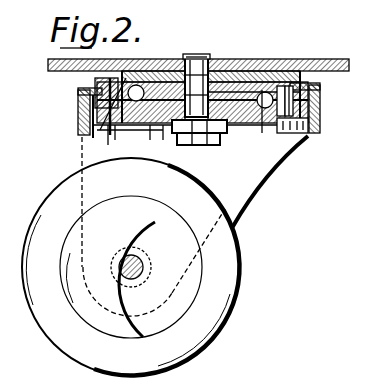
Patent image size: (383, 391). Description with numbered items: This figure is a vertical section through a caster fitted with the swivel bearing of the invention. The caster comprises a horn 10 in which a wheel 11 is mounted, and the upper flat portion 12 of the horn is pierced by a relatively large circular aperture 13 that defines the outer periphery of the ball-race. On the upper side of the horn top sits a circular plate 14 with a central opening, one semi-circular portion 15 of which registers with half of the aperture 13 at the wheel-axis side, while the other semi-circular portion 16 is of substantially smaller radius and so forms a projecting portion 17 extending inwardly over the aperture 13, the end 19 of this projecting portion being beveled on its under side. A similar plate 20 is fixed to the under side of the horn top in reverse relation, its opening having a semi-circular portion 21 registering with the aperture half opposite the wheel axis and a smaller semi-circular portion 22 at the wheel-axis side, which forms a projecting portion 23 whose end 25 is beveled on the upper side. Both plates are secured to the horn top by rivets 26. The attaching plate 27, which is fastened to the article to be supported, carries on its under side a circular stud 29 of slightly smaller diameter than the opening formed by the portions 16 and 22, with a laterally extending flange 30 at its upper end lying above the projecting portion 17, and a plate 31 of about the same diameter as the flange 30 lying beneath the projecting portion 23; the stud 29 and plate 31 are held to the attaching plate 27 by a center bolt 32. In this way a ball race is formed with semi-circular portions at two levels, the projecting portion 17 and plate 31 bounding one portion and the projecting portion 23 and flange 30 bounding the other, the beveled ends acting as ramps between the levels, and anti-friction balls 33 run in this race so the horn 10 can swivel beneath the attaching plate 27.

The horn 10 is at (245, 203).
The wheel 11 is at (243, 248).
The upper flat portion 12 is at (322, 96).
The circular aperture 13 is at (322, 103).
The circular plate 14 is at (302, 87).
The semi-circular portion 15 is at (100, 86).
The semi-circular portion 16 is at (280, 84).
The projecting portion 17 is at (292, 86).
The end 19 is at (230, 76).
The plate 20 is at (85, 138).
The semi-circular portion 21 is at (278, 124).
The semi-circular portion 22 is at (157, 131).
The projecting portion 23 is at (135, 128).
The end 25 is at (198, 146).
The rivets 26 is at (80, 110).
The attaching plate 27 is at (192, 56).
The circular stud 29 is at (212, 70).
The laterally extending flange 30 is at (198, 55).
The plate 31 is at (258, 124).
The center bolt 32 is at (247, 66).
The anti-friction balls 33 is at (100, 130).